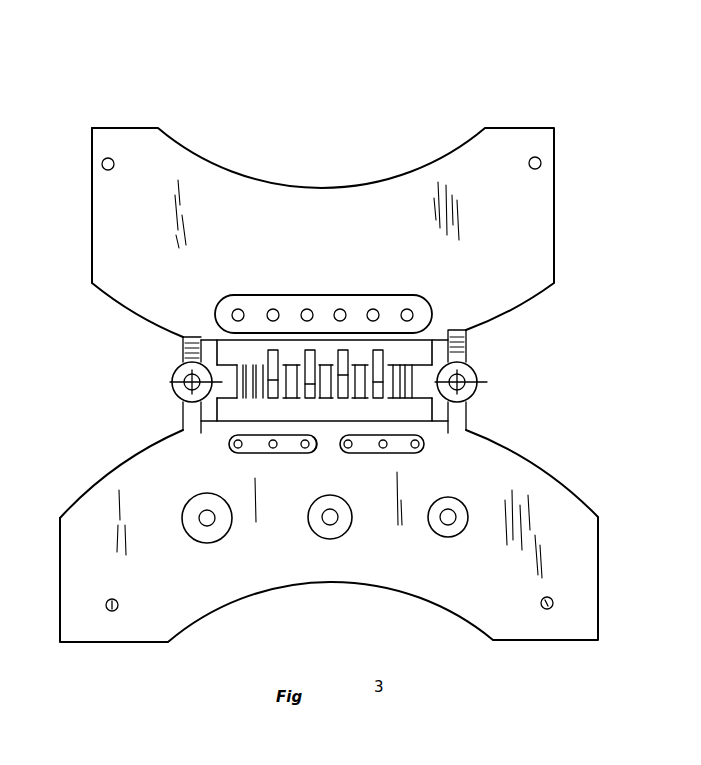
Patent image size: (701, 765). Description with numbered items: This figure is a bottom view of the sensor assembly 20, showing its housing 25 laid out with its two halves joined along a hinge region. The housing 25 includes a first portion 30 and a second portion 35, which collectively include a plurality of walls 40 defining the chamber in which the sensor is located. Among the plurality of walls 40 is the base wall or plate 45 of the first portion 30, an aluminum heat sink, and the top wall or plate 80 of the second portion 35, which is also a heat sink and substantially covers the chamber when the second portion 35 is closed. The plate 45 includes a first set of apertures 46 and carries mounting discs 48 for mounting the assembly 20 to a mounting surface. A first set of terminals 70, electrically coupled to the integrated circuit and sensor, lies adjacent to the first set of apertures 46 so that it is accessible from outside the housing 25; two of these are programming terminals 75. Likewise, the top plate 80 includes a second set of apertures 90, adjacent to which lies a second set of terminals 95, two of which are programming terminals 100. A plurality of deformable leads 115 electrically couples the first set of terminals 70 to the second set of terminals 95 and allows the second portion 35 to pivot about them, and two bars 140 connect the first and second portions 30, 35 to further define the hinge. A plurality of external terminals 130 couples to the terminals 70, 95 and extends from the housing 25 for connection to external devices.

The sensor assembly 20 is at (62, 82).
The housing 25 is at (78, 500).
The first portion 30 is at (597, 427).
The second portion 35 is at (592, 58).
The plurality of walls 40 is at (495, 462).
The base wall or plate 45 is at (492, 590).
The first set of apertures 46 is at (318, 453).
The mounting discs 48 is at (428, 523).
The first set of terminals 70 is at (240, 449).
The terminals 75 is at (232, 444).
The top wall or plate 80 is at (264, 256).
The second set of apertures 90 is at (420, 297).
The second set of terminals 95 is at (405, 309).
The terminals 100 is at (236, 311).
The plurality of leads 115 is at (277, 414).
The plurality of external terminals 130 is at (268, 356).
The bars 140 is at (174, 375).